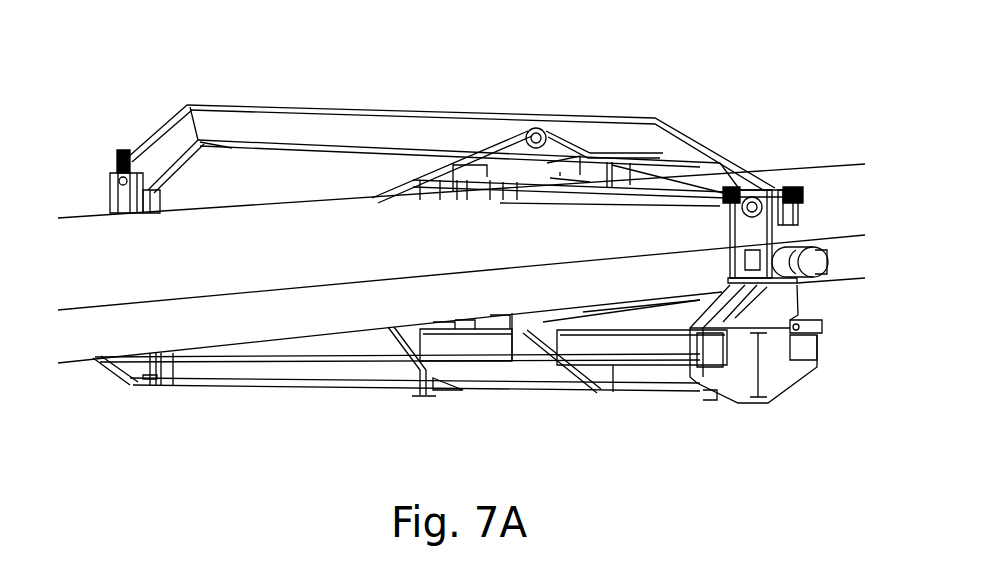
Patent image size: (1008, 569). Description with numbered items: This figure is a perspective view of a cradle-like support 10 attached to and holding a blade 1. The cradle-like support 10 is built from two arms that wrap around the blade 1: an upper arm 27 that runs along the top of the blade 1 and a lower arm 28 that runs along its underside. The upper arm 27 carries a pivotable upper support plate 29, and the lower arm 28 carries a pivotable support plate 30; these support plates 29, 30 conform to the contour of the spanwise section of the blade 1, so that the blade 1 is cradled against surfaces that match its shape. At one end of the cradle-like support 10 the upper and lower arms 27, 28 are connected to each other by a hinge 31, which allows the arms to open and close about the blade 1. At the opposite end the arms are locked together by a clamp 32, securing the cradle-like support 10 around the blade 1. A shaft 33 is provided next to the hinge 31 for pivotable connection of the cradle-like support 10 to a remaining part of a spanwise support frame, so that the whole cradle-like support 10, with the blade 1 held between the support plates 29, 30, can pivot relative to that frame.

The blade 1 is at (820, 162).
The cradle-like support 10 is at (430, 78).
The upper arm 27 is at (283, 108).
The lower arm 28 is at (320, 388).
The upper support plate 29 is at (658, 187).
The support plate 30 is at (512, 332).
The hinge 31 is at (803, 194).
The clamp 32 is at (103, 197).
The shaft 33 is at (823, 263).